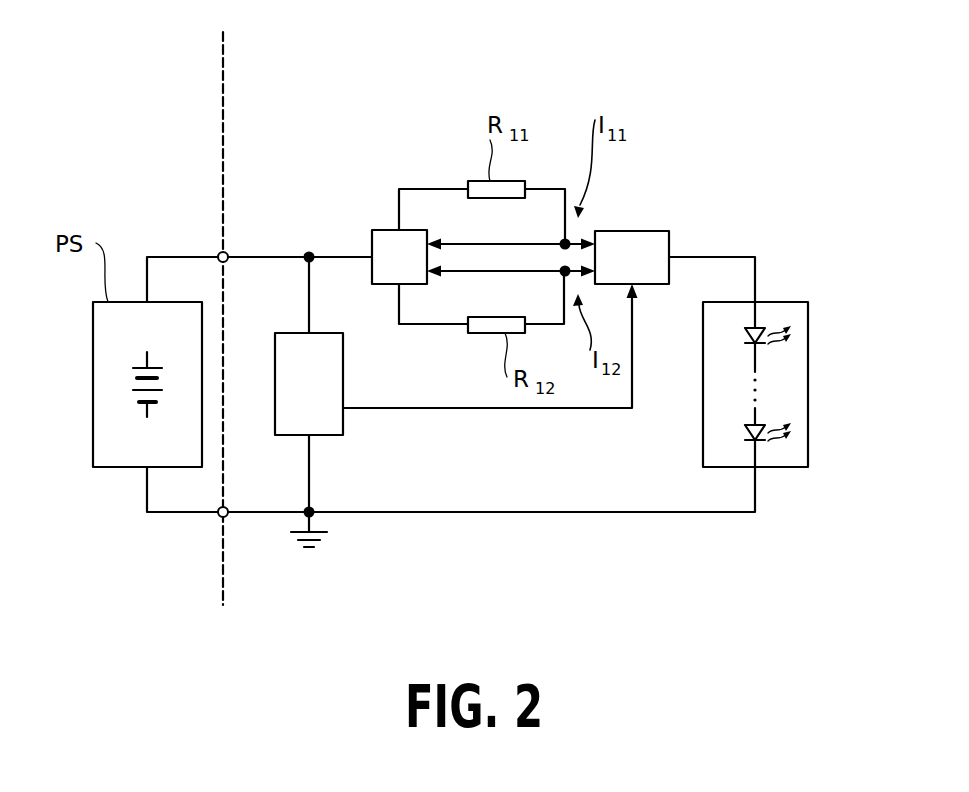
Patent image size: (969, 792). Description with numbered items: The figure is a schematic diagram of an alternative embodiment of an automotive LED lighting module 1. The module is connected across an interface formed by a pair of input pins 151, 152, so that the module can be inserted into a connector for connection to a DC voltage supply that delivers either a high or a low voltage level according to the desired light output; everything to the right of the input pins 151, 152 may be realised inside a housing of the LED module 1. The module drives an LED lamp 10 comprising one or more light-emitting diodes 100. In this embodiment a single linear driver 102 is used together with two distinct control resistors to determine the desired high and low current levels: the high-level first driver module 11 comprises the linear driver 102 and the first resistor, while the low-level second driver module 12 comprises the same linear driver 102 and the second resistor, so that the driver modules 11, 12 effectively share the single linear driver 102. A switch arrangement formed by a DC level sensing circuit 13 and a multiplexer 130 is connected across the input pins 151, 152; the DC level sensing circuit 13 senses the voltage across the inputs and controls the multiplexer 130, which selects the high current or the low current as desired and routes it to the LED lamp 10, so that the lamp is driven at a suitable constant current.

The automotive LED lighting module 1 is at (672, 98).
The LED lamp 10 is at (800, 295).
The first driver module 11 is at (442, 166).
The second driver module 12 is at (450, 345).
The DC level sensing circuit 13 is at (335, 435).
The light-emitting diode 100 is at (770, 344).
The linear driver 102 is at (380, 230).
The multiplexer 130 is at (632, 231).
The input pin 151 is at (218, 252).
The input pin 152 is at (220, 518).